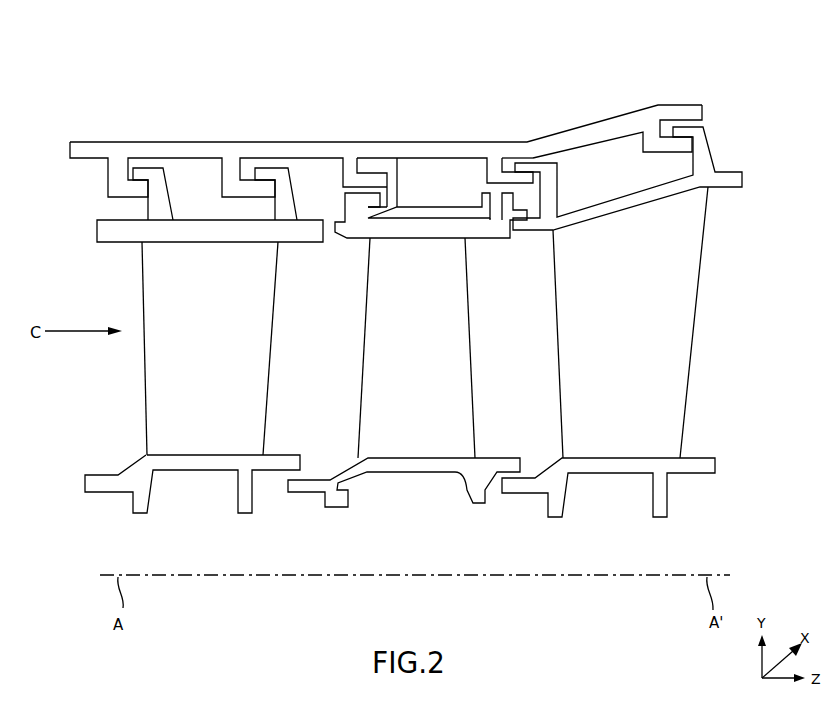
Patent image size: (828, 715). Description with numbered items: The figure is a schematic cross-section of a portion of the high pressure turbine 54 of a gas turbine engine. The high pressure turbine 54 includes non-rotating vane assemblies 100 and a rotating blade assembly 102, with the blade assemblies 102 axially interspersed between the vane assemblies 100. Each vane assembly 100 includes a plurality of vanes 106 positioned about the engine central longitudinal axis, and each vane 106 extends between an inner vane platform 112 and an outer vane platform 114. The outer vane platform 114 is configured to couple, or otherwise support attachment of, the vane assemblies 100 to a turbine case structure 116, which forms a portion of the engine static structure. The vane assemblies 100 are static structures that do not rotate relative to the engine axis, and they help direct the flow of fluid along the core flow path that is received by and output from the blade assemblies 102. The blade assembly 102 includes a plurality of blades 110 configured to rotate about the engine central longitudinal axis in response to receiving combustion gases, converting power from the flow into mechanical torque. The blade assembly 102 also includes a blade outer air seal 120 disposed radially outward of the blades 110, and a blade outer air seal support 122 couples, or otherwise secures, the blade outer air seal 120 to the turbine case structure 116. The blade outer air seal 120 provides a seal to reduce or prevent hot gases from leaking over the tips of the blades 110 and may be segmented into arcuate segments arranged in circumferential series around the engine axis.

The high pressure turbine 54 is at (182, 75).
The vane assembly 100 is at (88, 170).
The blade assembly 102 is at (318, 165).
The vane 106 is at (204, 358).
The blade 110 is at (417, 363).
The inner vane platform 112 is at (283, 457).
The outer vane platform 114 is at (183, 230).
The turbine case structure 116 is at (408, 147).
The blade outer air seal 120 is at (468, 226).
The blade outer air seal support 122 is at (412, 211).